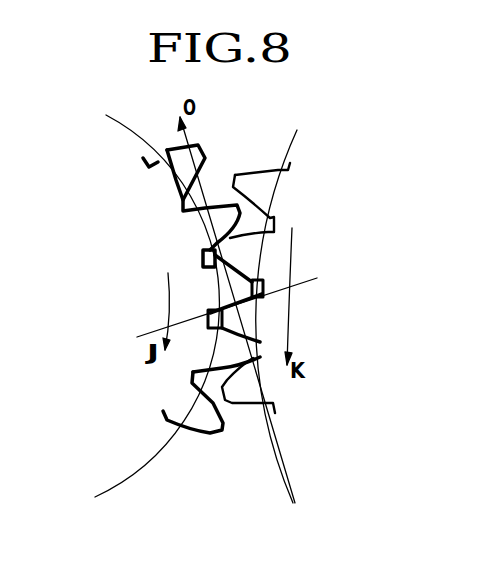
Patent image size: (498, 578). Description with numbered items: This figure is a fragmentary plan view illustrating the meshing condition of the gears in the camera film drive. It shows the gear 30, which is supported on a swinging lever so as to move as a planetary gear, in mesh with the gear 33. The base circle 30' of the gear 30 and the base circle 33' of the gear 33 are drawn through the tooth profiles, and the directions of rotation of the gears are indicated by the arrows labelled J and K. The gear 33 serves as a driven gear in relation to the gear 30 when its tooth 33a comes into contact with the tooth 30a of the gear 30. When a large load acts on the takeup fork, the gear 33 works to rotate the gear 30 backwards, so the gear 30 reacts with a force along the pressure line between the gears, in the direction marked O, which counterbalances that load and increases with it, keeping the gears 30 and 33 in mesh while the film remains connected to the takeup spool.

The gear 30 is at (184, 289).
The gear 33 is at (303, 288).
The tooth 30a is at (245, 290).
The tooth 33a is at (231, 322).
The base circle 30' is at (167, 306).
The base circle 33' is at (265, 308).